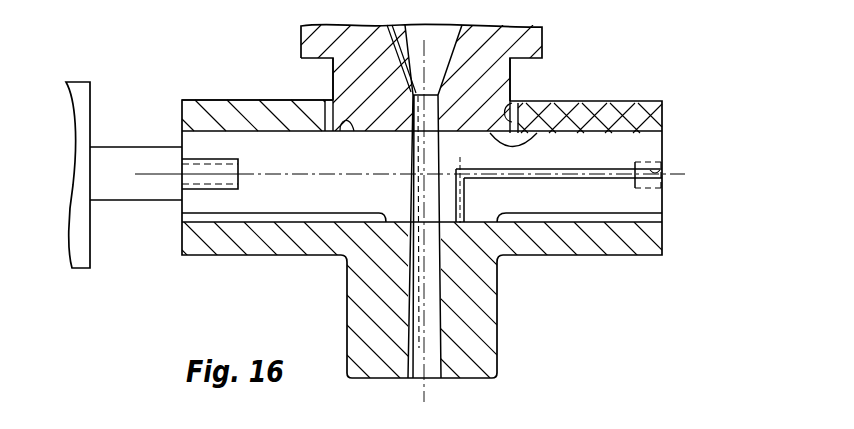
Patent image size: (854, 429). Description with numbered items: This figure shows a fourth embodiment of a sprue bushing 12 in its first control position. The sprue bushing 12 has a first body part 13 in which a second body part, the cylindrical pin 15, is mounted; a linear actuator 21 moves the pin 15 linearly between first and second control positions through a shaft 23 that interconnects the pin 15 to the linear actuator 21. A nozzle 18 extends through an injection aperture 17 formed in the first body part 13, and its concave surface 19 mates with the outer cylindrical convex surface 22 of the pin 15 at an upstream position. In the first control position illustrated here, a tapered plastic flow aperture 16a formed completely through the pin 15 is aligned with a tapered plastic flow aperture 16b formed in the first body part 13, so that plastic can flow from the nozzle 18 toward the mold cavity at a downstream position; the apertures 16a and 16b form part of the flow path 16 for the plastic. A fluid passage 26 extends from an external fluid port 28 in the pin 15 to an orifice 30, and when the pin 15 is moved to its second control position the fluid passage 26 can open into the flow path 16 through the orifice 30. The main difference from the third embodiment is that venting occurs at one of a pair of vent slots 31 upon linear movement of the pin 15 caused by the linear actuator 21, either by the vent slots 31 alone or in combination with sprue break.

The sprue bushing 12 is at (209, 99).
The first body part 13 is at (248, 100).
The pin 15 is at (182, 133).
The flow path 16 is at (430, 332).
The plastic flow aperture 16a is at (414, 190).
The plastic flow aperture 16b is at (440, 292).
The injection aperture 17 is at (510, 105).
The nozzle 18 is at (540, 52).
The concave surface 19 is at (587, 176).
The linear actuator 21 is at (78, 271).
The outer cylindrical convex surface 22 is at (347, 122).
The shaft 23 is at (121, 202).
The fluid passage 26 is at (636, 102).
The external fluid port 28 is at (660, 168).
The orifice 30 is at (463, 212).
The vent slot 31 is at (213, 255).